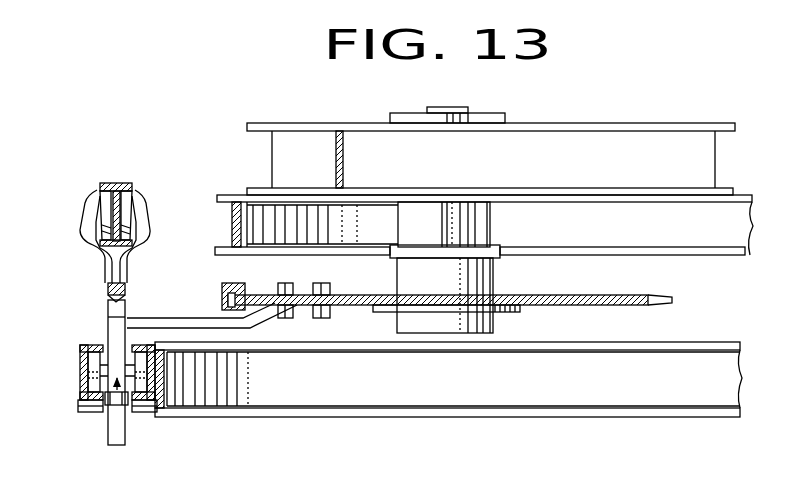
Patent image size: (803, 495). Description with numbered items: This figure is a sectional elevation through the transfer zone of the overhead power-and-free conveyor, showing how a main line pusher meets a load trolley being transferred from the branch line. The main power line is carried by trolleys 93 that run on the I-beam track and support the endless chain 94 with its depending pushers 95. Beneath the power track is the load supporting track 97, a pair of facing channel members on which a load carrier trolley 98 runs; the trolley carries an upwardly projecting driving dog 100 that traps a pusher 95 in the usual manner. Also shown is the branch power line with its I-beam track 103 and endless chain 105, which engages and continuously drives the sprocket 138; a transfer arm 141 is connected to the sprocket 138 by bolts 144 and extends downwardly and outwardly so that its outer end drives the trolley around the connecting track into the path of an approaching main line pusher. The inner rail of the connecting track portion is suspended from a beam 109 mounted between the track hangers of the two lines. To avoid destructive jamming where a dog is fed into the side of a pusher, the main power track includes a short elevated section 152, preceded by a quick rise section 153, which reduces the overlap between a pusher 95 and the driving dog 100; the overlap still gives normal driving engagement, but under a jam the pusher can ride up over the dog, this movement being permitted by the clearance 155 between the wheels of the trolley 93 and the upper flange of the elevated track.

The trolley 93 is at (98, 258).
The endless chain 94 is at (108, 288).
The pusher 95 is at (107, 310).
The load supporting track 97 is at (77, 363).
The trolley 98 is at (117, 393).
The driving dog 100 is at (121, 327).
The I-beam track 103 is at (573, 255).
The endless chain 105 is at (232, 290).
The beam 109 is at (170, 413).
The sprocket 138 is at (547, 306).
The transfer arm 141 is at (178, 325).
The bolts 144 is at (318, 284).
The elevated track section 152 is at (119, 185).
The quick rise section 153 is at (128, 243).
The clearance 155 is at (134, 196).